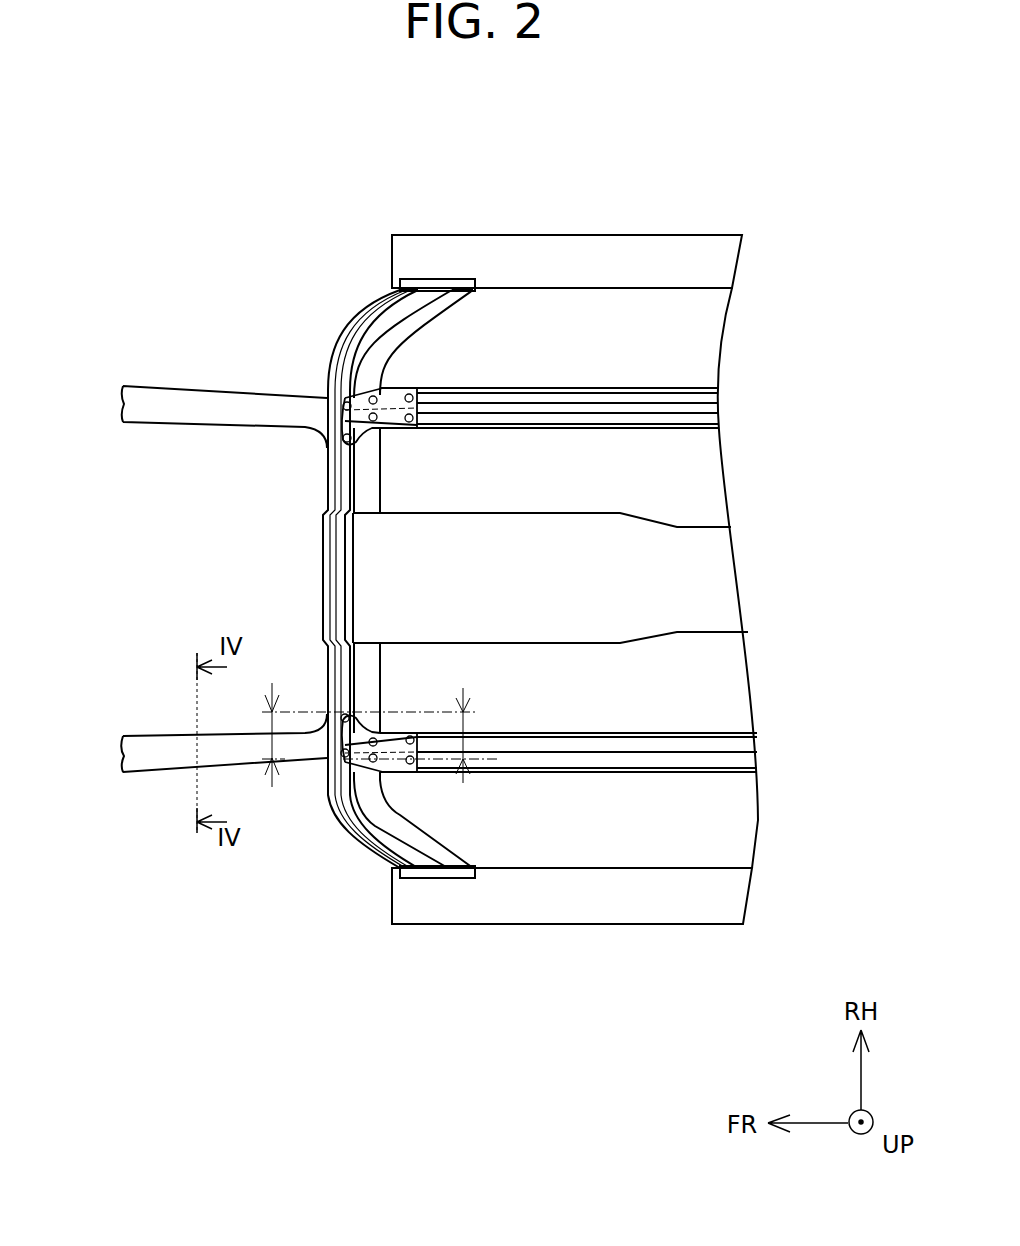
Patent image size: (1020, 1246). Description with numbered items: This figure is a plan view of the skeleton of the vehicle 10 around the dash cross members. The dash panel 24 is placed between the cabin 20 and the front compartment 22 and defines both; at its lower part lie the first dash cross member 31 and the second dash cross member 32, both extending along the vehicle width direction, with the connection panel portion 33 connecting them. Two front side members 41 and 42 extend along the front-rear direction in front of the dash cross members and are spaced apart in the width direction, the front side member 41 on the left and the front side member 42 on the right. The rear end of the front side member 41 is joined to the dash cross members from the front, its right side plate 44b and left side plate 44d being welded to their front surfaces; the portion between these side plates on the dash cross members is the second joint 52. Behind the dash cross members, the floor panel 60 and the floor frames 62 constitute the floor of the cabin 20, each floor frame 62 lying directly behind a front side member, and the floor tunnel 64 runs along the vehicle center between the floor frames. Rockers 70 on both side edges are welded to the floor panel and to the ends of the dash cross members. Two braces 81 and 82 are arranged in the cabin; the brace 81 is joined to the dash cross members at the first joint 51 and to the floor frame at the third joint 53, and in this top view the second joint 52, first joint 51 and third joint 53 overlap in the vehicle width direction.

The vehicle 10 is at (150, 106).
The cabin 20 is at (748, 484).
The front compartment 22 is at (118, 548).
The dash panel 24 is at (319, 634).
The first dash cross member 31 is at (407, 840).
The second dash cross member 32 is at (432, 330).
The connection panel portion 33 is at (388, 852).
The front side member 41 is at (175, 753).
The front side member 42 is at (215, 408).
The right side plate 44b is at (145, 735).
The left side plate 44d is at (143, 772).
The first joint 51 is at (465, 720).
The second joint 52 is at (268, 716).
The third joint 53 is at (383, 812).
The floor panel 60 is at (605, 695).
The floor frame 62 is at (713, 410).
The floor tunnel 64 is at (708, 583).
The rocker 70 is at (682, 260).
The brace 81 is at (377, 690).
The brace 82 is at (367, 463).